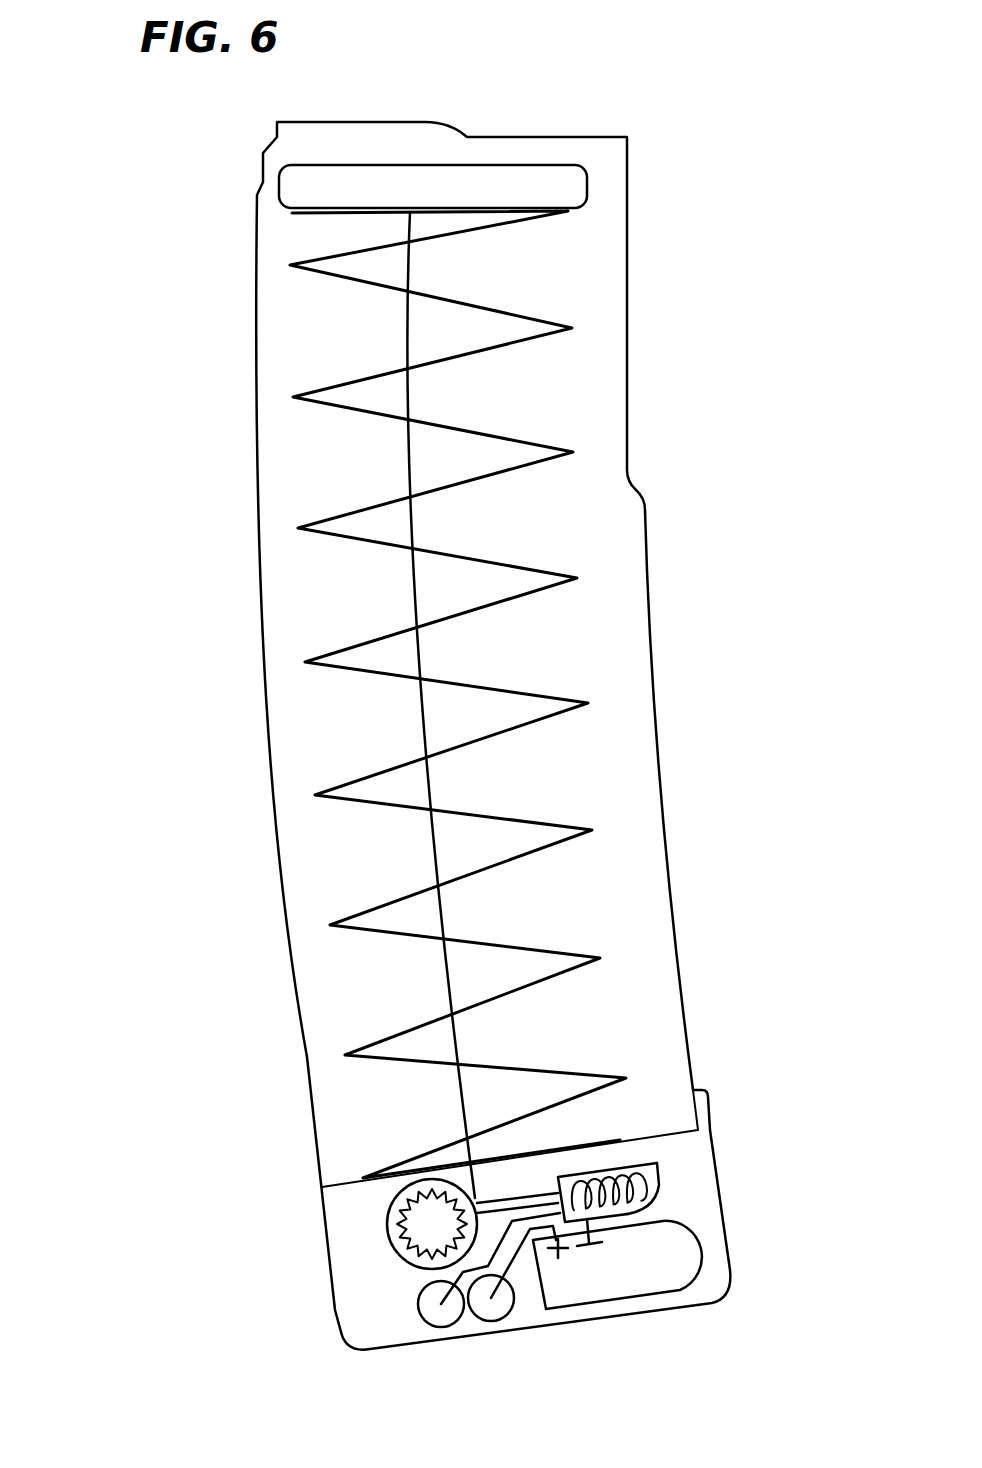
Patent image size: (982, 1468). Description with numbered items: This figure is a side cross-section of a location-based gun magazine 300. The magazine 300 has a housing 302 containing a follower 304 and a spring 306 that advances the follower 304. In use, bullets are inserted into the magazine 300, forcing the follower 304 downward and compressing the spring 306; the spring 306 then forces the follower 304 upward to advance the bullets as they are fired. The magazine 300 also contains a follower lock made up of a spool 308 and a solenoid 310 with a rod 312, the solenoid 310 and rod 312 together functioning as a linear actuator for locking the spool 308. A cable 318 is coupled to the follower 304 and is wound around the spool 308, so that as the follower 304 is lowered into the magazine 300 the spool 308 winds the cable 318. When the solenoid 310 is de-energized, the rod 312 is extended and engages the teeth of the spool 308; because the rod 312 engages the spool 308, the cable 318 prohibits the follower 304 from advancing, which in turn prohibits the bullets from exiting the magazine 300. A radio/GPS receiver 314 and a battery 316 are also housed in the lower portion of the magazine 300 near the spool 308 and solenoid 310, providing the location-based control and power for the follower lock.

The location-based magazine 300 is at (108, 302).
The housing 302 is at (650, 640).
The follower 304 is at (522, 178).
The spring 306 is at (542, 318).
The spool 308 is at (389, 1233).
The solenoid 310 is at (657, 1183).
The rod 312 is at (533, 1197).
The radio/GPS receiver 314 is at (492, 1300).
The battery 316 is at (633, 1267).
The cable 318 is at (405, 485).